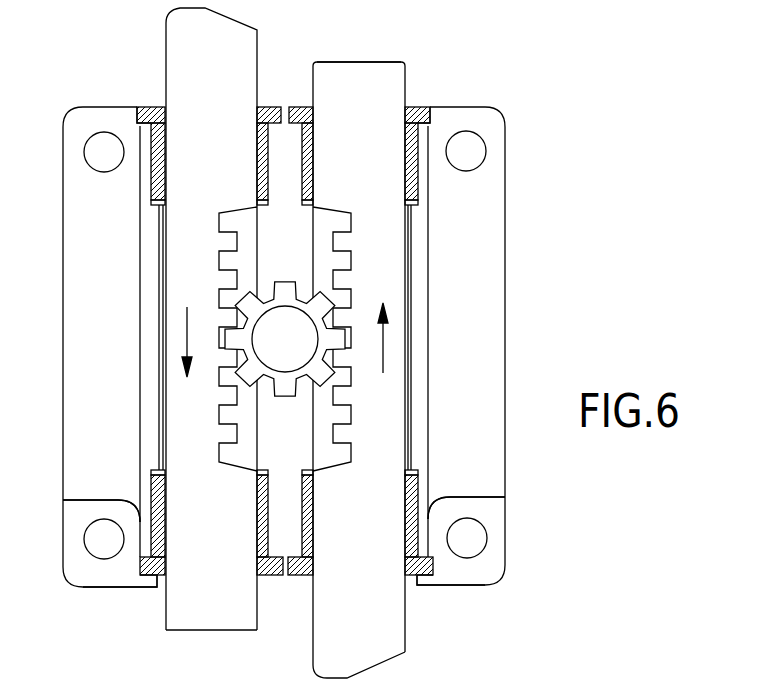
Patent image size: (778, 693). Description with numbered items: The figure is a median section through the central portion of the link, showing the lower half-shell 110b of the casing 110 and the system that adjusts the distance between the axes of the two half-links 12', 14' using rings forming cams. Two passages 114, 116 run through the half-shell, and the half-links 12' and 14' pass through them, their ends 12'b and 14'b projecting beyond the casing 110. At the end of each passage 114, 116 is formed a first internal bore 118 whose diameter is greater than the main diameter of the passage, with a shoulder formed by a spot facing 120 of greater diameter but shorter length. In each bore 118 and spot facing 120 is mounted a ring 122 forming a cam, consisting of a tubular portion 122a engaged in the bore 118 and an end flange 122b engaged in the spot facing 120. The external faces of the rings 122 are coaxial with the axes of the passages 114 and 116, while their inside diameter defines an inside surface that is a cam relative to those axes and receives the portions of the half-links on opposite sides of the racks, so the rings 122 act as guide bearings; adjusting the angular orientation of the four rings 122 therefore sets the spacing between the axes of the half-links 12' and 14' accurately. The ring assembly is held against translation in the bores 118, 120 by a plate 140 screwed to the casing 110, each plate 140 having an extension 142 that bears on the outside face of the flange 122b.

The casing 110 is at (513, 341).
The lower half-shell 110b is at (472, 243).
The first internal bore 118 is at (418, 152).
The half-link 12' is at (184, 319).
The end of first piston rod 12'b is at (211, 646).
The half-link 14' is at (375, 350).
The end of second piston rod 14'b is at (359, 349).
The ring forming a cam 122 is at (426, 131).
The tubular portion 122a is at (418, 180).
The end flange 122b is at (300, 107).
The spot facing 120 is at (420, 107).
The passage 116 is at (163, 310).
The passage 114 is at (406, 400).
The plate 140 is at (78, 540).
The extension 142 is at (146, 590).